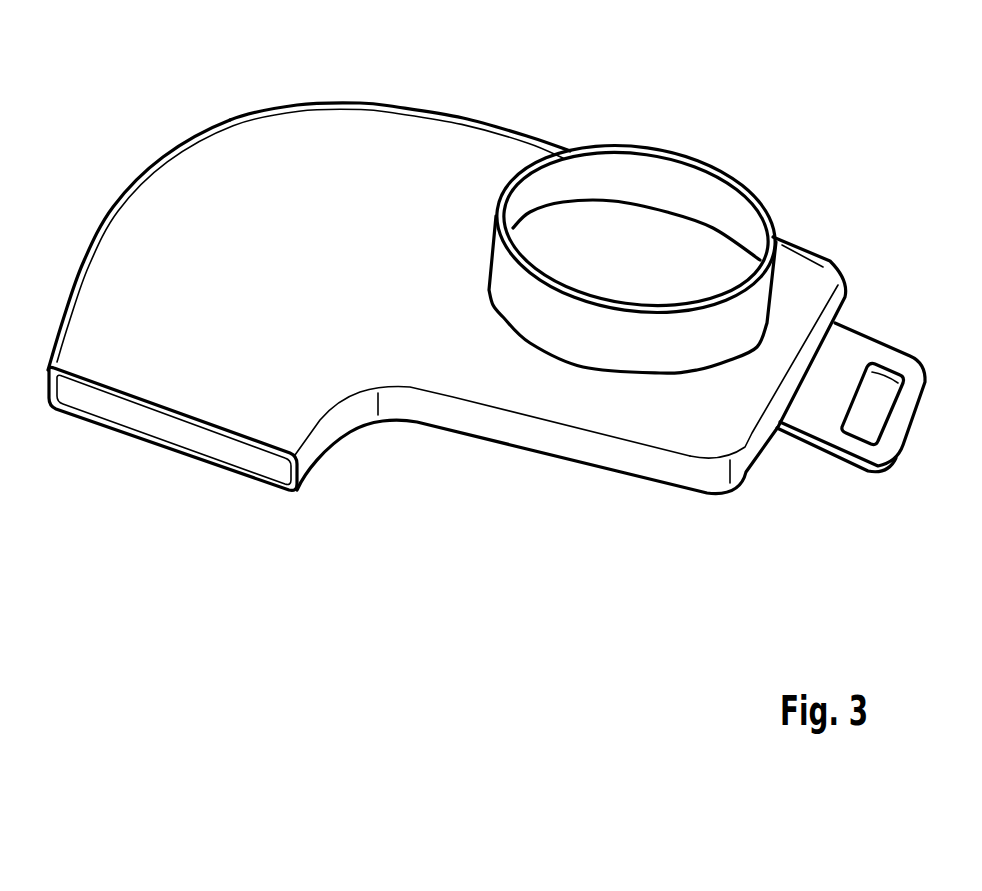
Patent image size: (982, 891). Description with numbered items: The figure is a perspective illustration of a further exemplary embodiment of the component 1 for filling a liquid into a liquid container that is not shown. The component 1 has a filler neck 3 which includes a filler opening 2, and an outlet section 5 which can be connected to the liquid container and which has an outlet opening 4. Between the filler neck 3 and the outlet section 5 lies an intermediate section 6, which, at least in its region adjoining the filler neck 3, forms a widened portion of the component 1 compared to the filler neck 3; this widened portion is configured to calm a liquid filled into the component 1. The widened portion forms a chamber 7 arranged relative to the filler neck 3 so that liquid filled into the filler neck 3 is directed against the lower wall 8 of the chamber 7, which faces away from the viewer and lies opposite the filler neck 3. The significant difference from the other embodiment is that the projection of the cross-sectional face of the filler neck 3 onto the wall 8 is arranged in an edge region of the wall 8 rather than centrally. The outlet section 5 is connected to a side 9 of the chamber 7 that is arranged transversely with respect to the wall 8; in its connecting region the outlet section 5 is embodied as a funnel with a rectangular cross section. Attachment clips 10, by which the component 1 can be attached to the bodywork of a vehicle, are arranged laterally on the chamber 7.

The component 1 is at (817, 196).
The filler opening 2 is at (620, 190).
The filler neck 3 is at (548, 302).
The outlet opening 4 is at (167, 427).
The outlet section 5 is at (118, 335).
The intermediate section 6 is at (693, 422).
The chamber 7 is at (382, 162).
The lower wall 8 is at (630, 280).
The side 9 is at (560, 432).
The attachment clips 10 is at (860, 357).